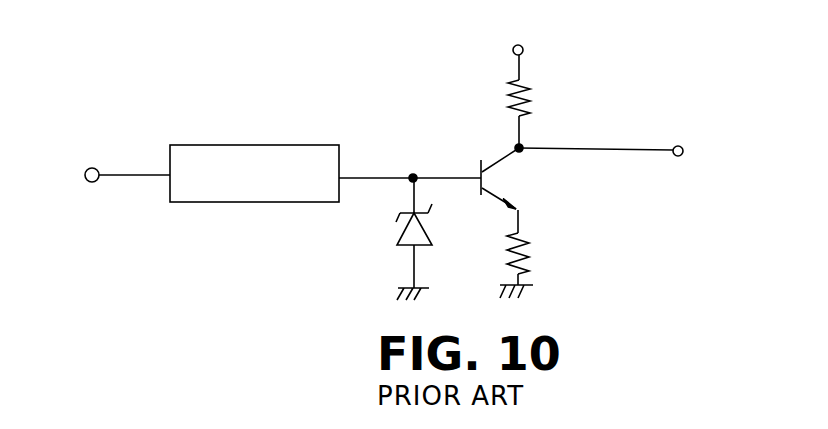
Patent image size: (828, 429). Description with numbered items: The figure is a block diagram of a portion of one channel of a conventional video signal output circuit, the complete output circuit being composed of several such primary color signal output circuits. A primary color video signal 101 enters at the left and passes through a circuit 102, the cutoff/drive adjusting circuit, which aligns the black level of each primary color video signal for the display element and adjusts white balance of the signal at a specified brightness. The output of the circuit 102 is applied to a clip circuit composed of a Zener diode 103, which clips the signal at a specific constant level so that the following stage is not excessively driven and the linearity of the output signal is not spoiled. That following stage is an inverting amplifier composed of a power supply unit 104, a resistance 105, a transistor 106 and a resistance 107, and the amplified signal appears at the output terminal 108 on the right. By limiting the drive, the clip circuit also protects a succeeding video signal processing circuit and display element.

The primary color video signal 101 is at (91, 168).
The circuit 102 is at (203, 143).
The Zener diode 103 is at (398, 238).
The power supply unit 104 is at (523, 45).
The resistance 105 is at (527, 116).
The transistor 106 is at (495, 205).
The resistance 107 is at (523, 265).
The output terminal 108 is at (684, 146).